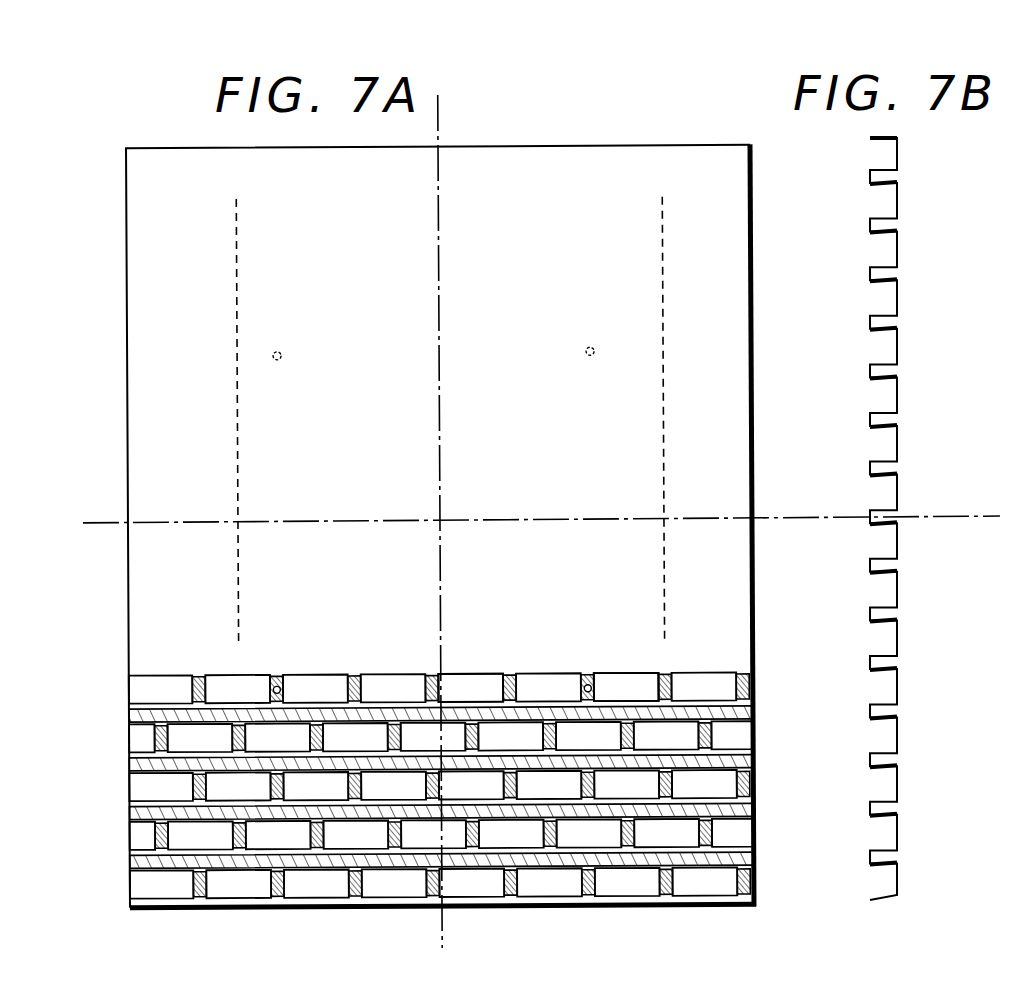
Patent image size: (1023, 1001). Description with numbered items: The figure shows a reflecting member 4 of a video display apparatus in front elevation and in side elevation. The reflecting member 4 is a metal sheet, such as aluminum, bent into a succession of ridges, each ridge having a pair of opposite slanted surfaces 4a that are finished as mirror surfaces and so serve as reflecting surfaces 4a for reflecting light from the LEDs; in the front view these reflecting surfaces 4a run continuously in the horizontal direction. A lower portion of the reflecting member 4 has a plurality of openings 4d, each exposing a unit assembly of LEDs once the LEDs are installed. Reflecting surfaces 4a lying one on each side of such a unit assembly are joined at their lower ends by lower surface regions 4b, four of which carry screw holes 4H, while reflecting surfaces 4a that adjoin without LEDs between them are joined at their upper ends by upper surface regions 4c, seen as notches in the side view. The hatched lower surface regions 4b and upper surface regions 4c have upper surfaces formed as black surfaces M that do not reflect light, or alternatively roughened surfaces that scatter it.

In FIG. 7A, the reflecting member 4 is at (497, 146).
In FIG. 7B, the reflecting member 4 is at (900, 246).
In FIG. 7A, the slanted surfaces 4a is at (392, 703).
In FIG. 7B, the slanted surfaces 4a is at (873, 188).
In FIG. 7A, the lower surface regions 4b is at (195, 678).
In FIG. 7A, the upper surface regions 4c is at (752, 711).
In FIG. 7B, the upper surface regions 4c is at (872, 762).
In FIG. 7A, the openings 4d is at (478, 685).
In FIG. 7A, the screw holes 4H is at (283, 350).
In FIG. 7A, the black surfaces M is at (661, 672).